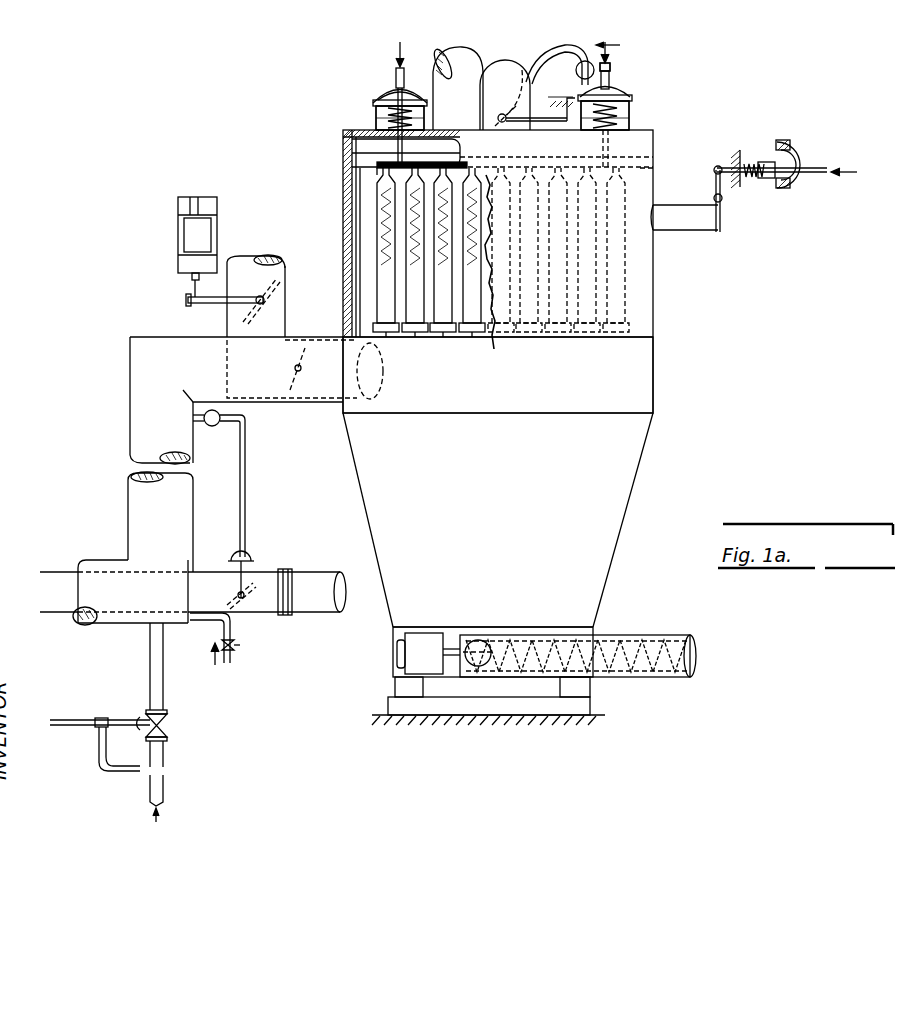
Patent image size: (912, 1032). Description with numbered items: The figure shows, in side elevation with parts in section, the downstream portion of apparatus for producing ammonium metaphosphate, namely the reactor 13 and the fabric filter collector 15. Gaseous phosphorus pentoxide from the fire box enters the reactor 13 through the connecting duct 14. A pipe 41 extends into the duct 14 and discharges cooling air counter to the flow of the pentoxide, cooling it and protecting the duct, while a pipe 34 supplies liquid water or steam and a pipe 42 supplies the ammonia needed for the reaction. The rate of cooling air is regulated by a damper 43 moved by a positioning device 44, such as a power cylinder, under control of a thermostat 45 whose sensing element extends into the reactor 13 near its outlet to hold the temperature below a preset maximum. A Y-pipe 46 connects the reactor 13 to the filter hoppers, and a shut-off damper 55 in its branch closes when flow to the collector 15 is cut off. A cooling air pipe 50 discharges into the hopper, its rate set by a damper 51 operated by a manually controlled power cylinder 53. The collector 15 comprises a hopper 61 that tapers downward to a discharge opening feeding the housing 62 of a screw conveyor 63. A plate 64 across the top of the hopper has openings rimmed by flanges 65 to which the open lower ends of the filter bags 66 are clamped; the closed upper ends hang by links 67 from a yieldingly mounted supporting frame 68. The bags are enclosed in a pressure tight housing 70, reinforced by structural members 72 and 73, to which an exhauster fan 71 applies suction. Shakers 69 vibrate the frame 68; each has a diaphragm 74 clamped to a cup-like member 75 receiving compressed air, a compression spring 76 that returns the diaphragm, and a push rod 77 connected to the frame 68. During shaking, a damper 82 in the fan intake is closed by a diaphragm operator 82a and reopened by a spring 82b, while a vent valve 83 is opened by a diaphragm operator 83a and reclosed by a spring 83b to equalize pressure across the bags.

The reactor 13 is at (95, 497).
The connecting duct 14 is at (105, 560).
The collector 15 is at (700, 367).
The pipe 34 is at (236, 657).
The pipe 41 is at (308, 572).
The pipe 42 is at (165, 705).
The damper 43 is at (232, 603).
The positioning device 44 is at (246, 557).
The thermostat 45 is at (212, 427).
The Y-pipe 46 is at (130, 337).
The cooling air pipe 50 is at (288, 292).
The damper 51 is at (243, 318).
The power cylinder 53 is at (158, 253).
The shut-off damper 55 is at (298, 398).
The hopper 61 is at (645, 447).
The housing 62 is at (465, 643).
The screw conveyor 63 is at (478, 666).
The plate 64 is at (357, 318).
The flange 65 is at (395, 333).
The filter bag 66 is at (410, 218).
The link 67 is at (384, 176).
The supporting frame 68 is at (377, 165).
The shaker 69 is at (358, 111).
The housing 70 is at (654, 290).
The exhauster fan 71 is at (474, 78).
The structural member 72 is at (352, 138).
The structural member 73 is at (356, 200).
The diaphragm 74 is at (385, 95).
The cup-like member 75 is at (396, 80).
The compression spring 76 is at (420, 118).
The push rod 77 is at (352, 143).
The damper 82 is at (527, 95).
The diaphragm operator 82a is at (590, 52).
The spring 82b is at (612, 70).
The vent valve 83 is at (720, 220).
The diaphragm operator 83a is at (790, 150).
The spring 83b is at (752, 162).